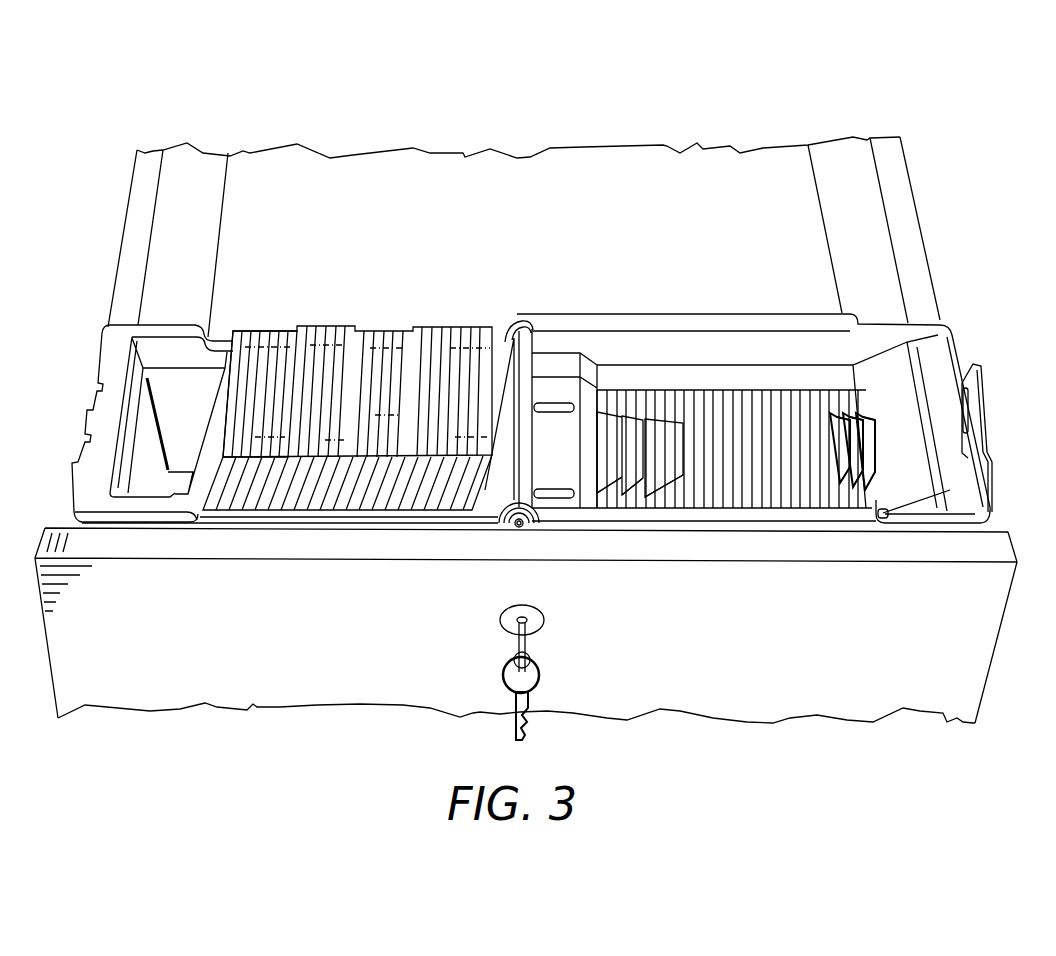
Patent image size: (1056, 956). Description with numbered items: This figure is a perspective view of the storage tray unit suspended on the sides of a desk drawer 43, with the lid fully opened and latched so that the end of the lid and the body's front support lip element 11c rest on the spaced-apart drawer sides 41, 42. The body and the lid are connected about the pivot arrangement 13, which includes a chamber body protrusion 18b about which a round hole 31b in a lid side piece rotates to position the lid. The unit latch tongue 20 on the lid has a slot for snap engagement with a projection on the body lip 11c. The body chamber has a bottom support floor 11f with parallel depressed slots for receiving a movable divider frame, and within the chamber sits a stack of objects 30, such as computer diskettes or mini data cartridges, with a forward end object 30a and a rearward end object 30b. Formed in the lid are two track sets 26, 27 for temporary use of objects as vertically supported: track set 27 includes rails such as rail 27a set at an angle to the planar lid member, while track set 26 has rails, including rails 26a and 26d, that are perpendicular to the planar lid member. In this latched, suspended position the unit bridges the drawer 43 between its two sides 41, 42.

The support lip element 11c is at (112, 346).
The support floor 11f is at (174, 487).
The pivot arrangement 13 is at (478, 312).
The chamber body protrusion 18b is at (515, 528).
The unit latch tongue 20 is at (983, 428).
The track set 26 is at (895, 431).
The rail 26a is at (875, 457).
The rail 26d is at (835, 430).
The track set 27 is at (665, 406).
The rail 27a is at (675, 467).
The objects 30 is at (348, 335).
The forward end object 30a is at (250, 338).
The rearward end object 30b is at (564, 430).
The round hole 31b is at (530, 528).
The drawer side 41 is at (130, 215).
The drawer side 42 is at (900, 240).
The drawer 43 is at (542, 212).